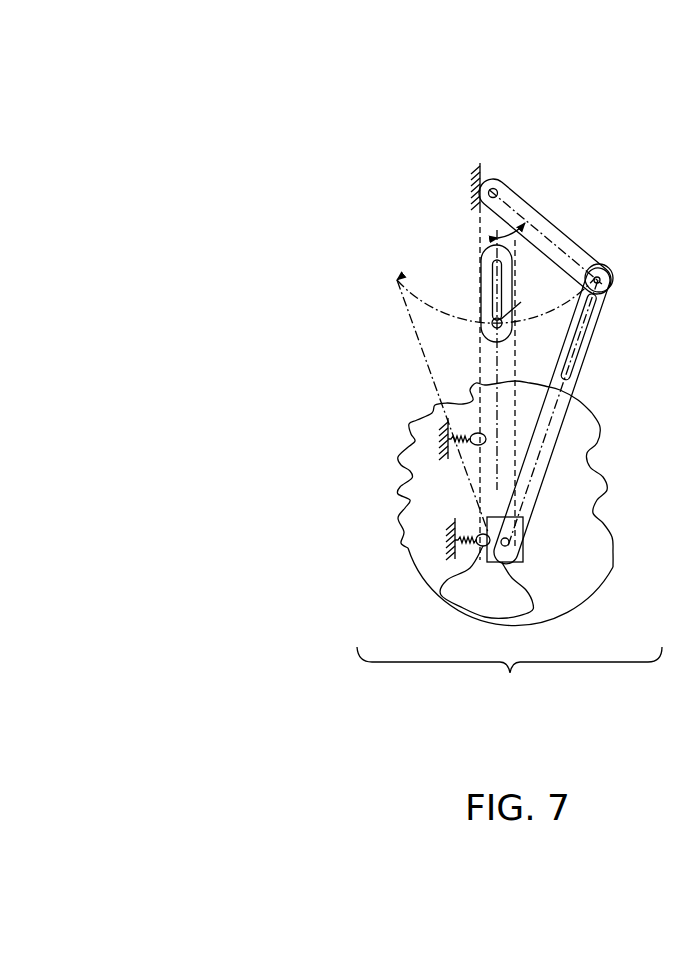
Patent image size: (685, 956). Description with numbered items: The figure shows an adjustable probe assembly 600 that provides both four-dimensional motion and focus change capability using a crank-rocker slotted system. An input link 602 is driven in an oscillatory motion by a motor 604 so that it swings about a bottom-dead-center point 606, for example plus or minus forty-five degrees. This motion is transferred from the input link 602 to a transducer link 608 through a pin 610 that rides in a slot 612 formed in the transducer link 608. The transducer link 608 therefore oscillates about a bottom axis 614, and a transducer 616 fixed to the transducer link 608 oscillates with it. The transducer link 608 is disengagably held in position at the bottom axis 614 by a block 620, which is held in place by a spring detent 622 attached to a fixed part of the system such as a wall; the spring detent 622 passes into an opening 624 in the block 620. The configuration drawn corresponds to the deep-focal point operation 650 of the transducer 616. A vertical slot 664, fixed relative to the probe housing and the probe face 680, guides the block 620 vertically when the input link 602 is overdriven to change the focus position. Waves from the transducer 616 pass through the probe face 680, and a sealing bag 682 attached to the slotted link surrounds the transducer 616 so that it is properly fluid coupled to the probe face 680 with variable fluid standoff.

The adjustable probe assembly 600 is at (353, 95).
The input link 602 is at (558, 222).
The motor 604 is at (482, 168).
The bottom-dead-center point 606 is at (491, 320).
The transducer link 608 is at (568, 407).
The pin 610 is at (613, 285).
The slot 612 is at (600, 323).
The bottom axis 614 is at (523, 532).
The transducer 616 is at (470, 605).
The block 620 is at (483, 533).
The spring detent 622 is at (433, 543).
The opening 624 is at (505, 562).
The deep-focal point operation 650 is at (509, 678).
The vertical slot 664 is at (483, 470).
The probe face 680 is at (594, 608).
The sealing bag 682 is at (614, 497).